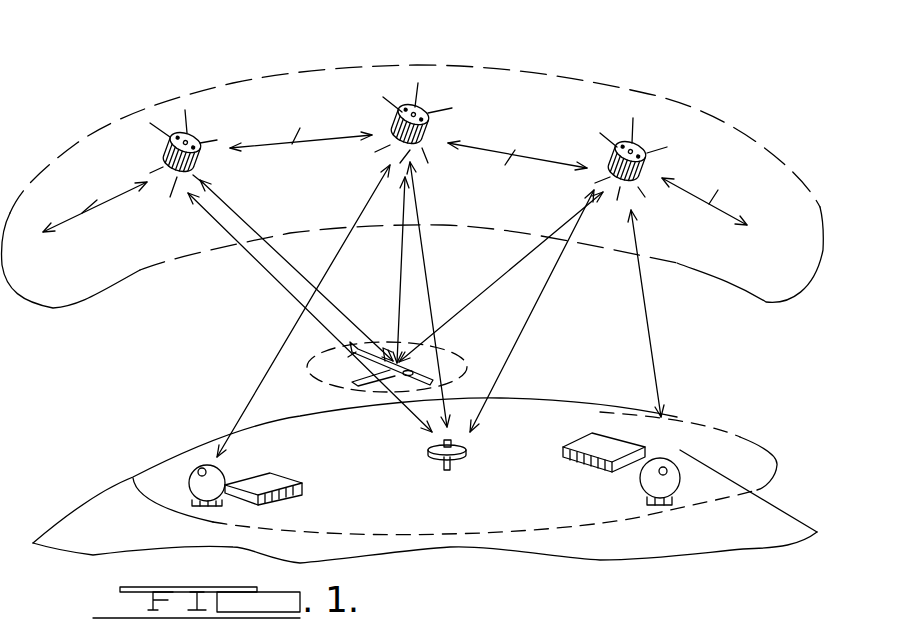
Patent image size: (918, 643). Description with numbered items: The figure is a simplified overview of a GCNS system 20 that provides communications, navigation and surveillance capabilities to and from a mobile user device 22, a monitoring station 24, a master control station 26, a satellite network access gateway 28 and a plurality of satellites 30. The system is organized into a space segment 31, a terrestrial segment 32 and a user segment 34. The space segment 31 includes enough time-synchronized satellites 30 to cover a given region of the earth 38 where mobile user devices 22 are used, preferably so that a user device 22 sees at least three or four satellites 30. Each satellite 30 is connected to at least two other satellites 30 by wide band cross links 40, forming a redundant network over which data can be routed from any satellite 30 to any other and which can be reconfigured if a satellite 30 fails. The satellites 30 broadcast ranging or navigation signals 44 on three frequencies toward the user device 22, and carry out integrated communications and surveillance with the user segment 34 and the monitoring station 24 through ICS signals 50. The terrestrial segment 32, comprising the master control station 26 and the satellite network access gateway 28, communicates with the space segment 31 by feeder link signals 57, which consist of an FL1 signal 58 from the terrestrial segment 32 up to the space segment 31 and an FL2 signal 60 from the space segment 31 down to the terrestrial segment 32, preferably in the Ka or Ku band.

The GCNS system 20 is at (548, 56).
The mobile user device 22 is at (401, 380).
The monitoring station 24 is at (450, 468).
The master control station 26 is at (672, 443).
The satellite network access gateway 28 is at (295, 475).
The satellite 30 is at (200, 133).
The space segment 31 is at (115, 123).
The terrestrial segment 32 is at (770, 443).
The user segment 34 is at (318, 394).
The earth 38 is at (780, 508).
The wide band cross link 40 is at (86, 206).
The navigation signal 44 is at (248, 224).
The ICS signal 50 is at (221, 200).
The feeder link signal 57 is at (360, 212).
The FL1 signal 58 is at (277, 356).
The FL2 signal 60 is at (255, 392).